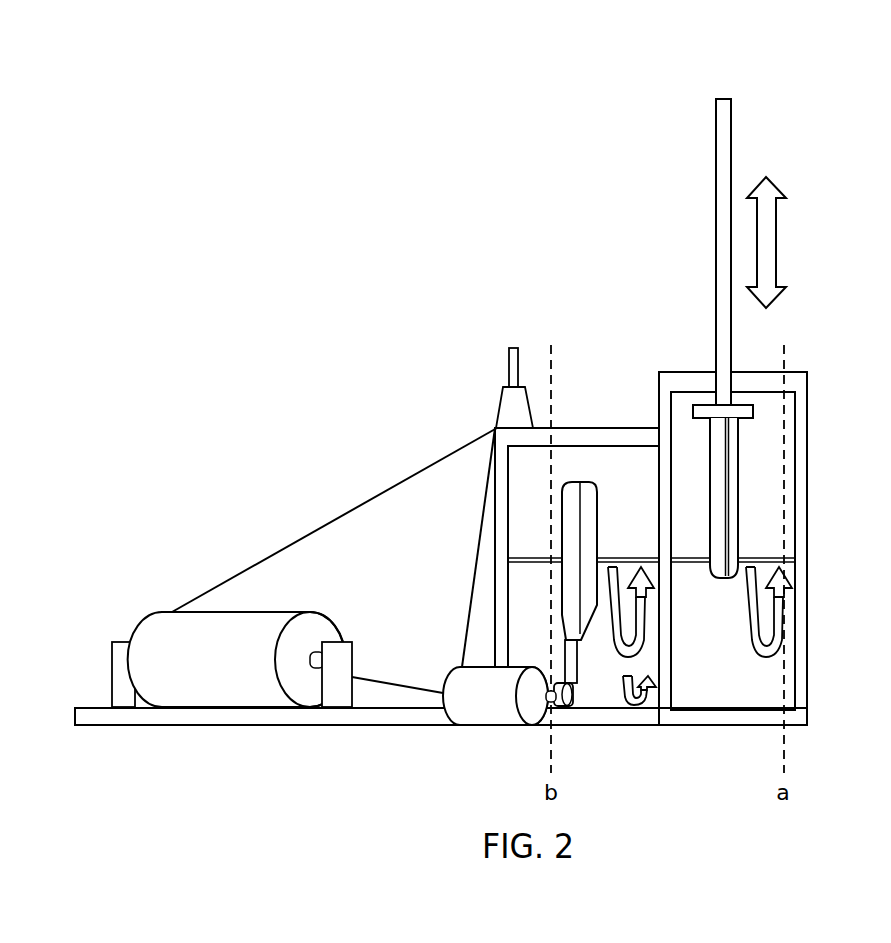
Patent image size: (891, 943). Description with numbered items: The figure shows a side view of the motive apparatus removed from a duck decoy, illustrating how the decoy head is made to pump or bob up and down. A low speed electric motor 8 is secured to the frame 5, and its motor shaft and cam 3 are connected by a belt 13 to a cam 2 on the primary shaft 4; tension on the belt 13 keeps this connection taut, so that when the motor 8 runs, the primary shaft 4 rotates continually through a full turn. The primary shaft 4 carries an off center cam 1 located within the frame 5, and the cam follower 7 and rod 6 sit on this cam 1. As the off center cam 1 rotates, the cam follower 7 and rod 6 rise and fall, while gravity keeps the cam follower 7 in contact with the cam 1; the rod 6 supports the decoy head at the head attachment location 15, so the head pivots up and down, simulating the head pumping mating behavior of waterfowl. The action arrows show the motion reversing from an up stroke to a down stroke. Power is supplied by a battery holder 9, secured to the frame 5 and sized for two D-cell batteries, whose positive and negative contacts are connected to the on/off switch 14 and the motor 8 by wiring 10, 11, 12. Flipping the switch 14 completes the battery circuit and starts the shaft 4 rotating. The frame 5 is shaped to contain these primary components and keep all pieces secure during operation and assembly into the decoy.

The off center cam 1 is at (710, 487).
The cam 2 is at (579, 483).
The motor shaft and cam 3 is at (578, 695).
The primary shaft 4 is at (537, 557).
The frame 5 is at (808, 492).
The rod 6 is at (716, 229).
The cam follower 7 is at (753, 412).
The motor 8 is at (476, 709).
The battery holder 9 is at (210, 672).
The wiring 10 is at (334, 520).
The wiring 11 is at (476, 560).
The wiring 12 is at (388, 682).
The belt 13 is at (565, 658).
The on/off switch 14 is at (501, 406).
The head attachment location 15 is at (723, 98).